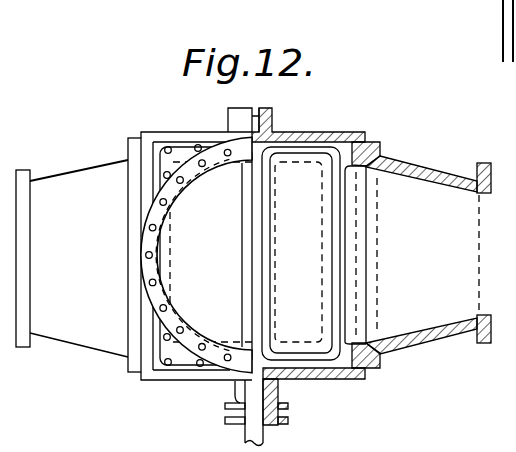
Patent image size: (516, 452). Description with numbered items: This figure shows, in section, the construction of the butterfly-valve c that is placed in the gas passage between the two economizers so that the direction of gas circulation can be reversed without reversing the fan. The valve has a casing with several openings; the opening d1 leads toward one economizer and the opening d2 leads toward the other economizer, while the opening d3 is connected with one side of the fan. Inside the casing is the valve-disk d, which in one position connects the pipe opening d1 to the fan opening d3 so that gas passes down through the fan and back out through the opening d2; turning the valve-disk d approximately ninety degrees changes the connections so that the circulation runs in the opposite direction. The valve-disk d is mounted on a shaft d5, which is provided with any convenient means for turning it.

The butterfly-valve c is at (254, 264).
The valve-disk d is at (301, 253).
The opening d1 is at (418, 255).
The opening d2 is at (72, 258).
The opening d3 is at (196, 255).
The shaft d5 is at (264, 443).